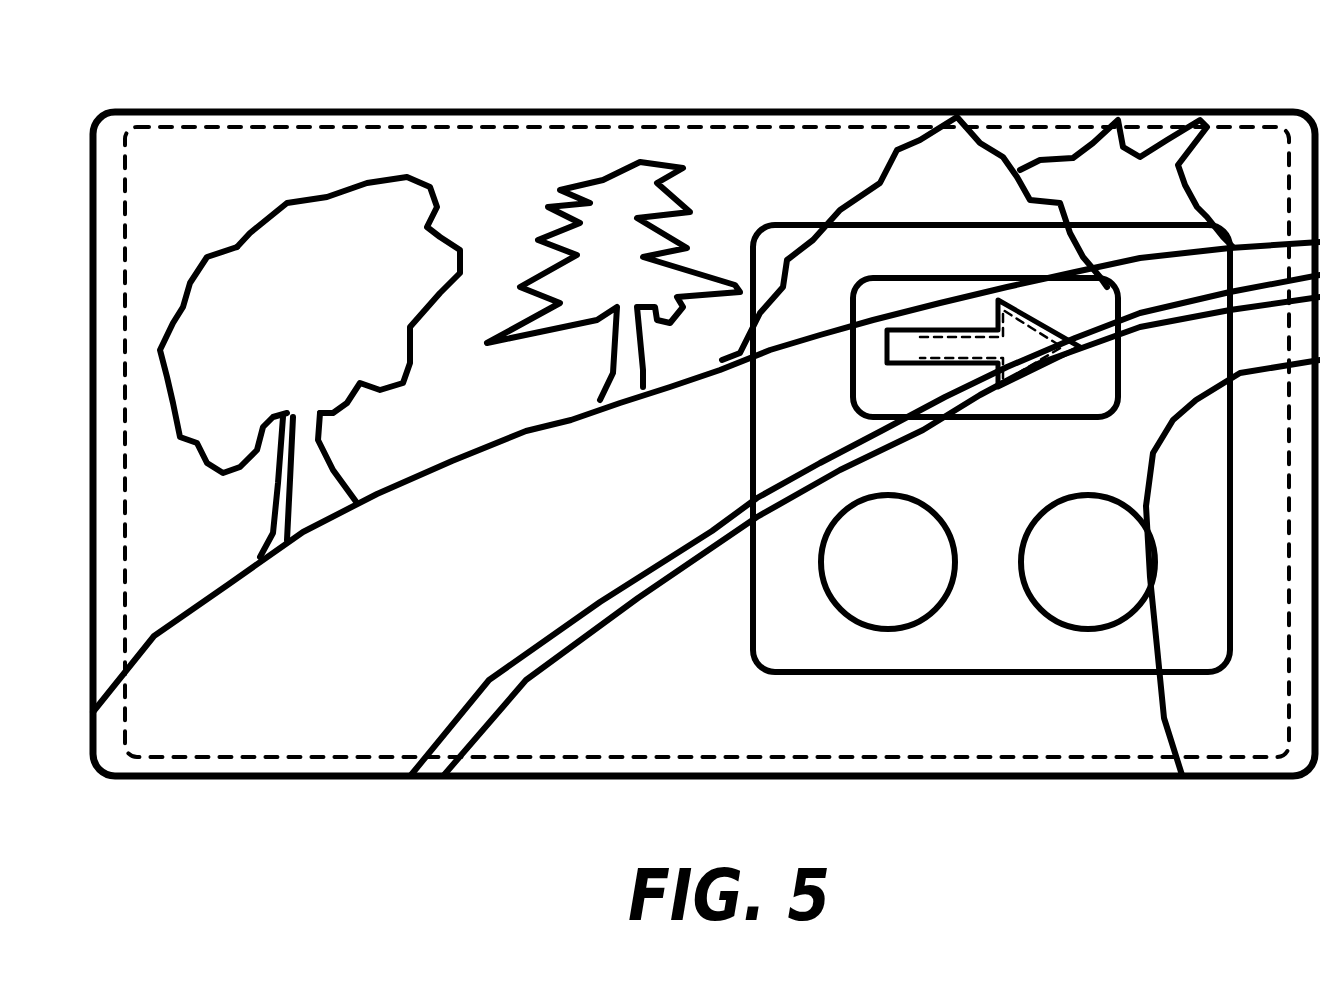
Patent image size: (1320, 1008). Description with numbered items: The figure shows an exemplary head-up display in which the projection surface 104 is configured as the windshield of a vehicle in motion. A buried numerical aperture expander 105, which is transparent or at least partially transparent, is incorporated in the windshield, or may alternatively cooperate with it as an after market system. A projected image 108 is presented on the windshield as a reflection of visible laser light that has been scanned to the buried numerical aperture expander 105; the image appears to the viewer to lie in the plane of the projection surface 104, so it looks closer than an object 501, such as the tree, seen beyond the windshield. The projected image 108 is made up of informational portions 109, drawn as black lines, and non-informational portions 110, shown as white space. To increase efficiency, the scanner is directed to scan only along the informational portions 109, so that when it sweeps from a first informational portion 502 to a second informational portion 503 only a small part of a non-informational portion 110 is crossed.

The projection surface 104 is at (297, 110).
The buried numerical aperture expander 105 is at (790, 125).
The object 501 is at (237, 247).
The projected image 108 is at (745, 405).
The non-informational portions 110 is at (960, 347).
The informational portions 109 is at (883, 363).
The first informational portion 502 is at (881, 541).
The second informational portion 503 is at (895, 548).